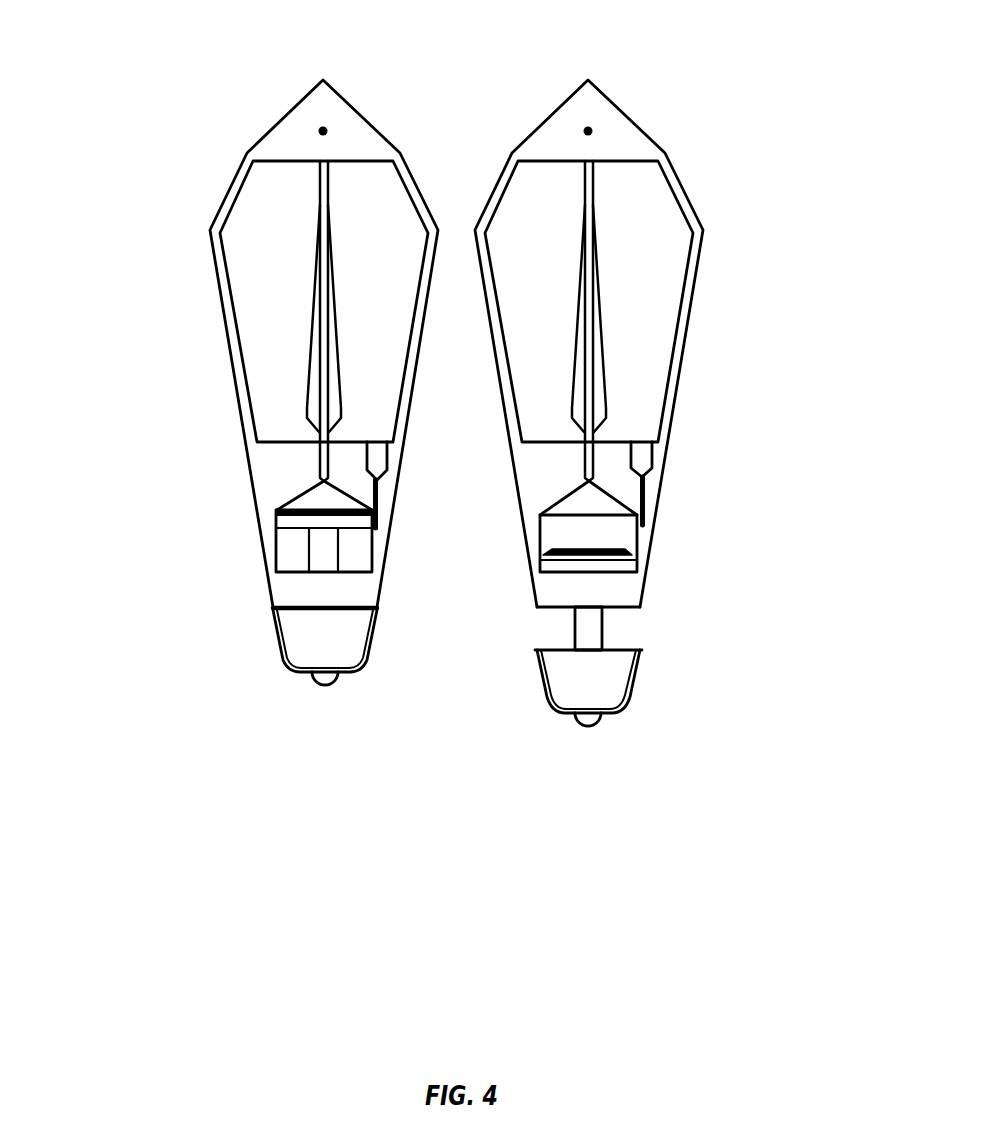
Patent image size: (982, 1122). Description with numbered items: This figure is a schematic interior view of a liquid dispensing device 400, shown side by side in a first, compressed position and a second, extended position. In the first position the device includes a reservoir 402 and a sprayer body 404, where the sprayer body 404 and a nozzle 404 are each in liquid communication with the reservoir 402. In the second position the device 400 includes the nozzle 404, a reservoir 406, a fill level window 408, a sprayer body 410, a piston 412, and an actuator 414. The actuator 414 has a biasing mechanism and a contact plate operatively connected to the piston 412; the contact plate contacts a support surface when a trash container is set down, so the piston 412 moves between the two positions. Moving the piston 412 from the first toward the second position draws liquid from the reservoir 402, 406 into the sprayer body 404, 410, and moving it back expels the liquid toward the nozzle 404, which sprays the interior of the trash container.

The liquid dispensing device 400 is at (252, 138).
The reservoir 402 is at (263, 230).
The nozzle 404 is at (323, 131).
The reservoir 406 is at (623, 336).
The fill level window 408 is at (600, 422).
The sprayer body 410 is at (610, 534).
The piston 412 is at (610, 565).
The actuator 414 is at (588, 705).